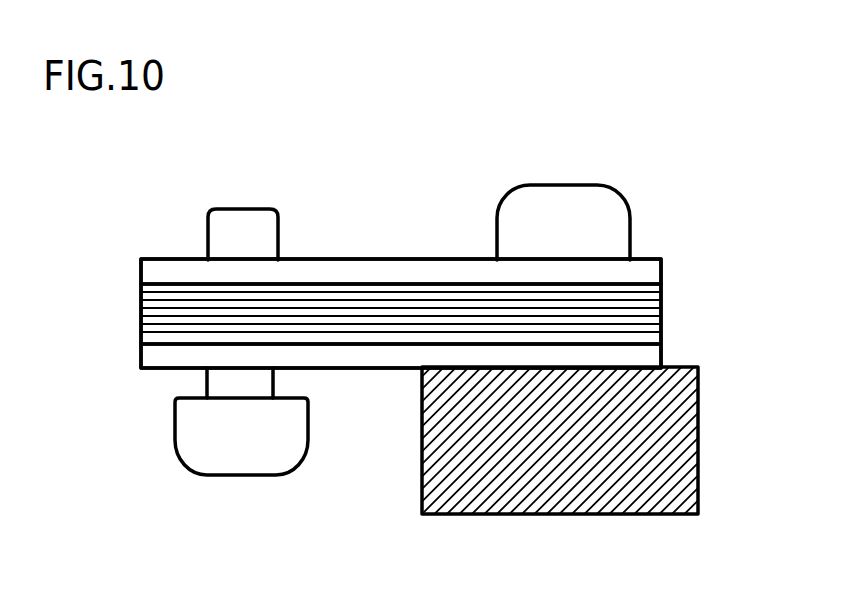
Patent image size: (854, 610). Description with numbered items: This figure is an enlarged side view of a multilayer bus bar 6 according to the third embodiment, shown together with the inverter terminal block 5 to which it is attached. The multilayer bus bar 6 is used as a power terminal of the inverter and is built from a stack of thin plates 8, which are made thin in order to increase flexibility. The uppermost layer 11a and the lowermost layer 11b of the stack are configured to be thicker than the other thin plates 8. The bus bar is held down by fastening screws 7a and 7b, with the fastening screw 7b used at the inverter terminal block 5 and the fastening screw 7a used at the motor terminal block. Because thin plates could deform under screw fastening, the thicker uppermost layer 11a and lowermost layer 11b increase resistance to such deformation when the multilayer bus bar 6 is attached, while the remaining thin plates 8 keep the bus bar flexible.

The inverter terminal block 5 is at (680, 445).
The multilayer bus bar 6 is at (122, 260).
The fastening screw 7a is at (205, 450).
The fastening screw 7b is at (602, 218).
The thin plates 8 is at (652, 310).
The uppermost layer 11a is at (627, 270).
The lowermost layer 11b is at (628, 355).